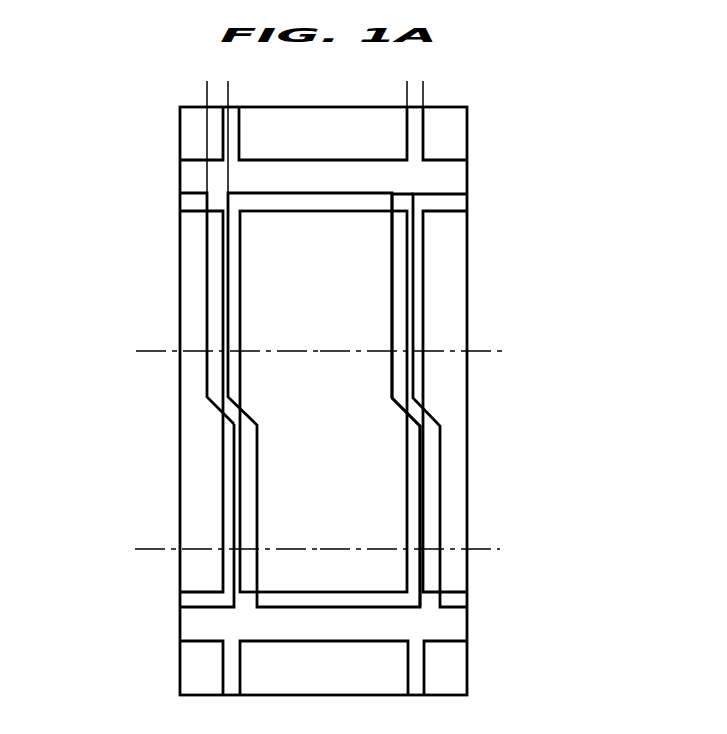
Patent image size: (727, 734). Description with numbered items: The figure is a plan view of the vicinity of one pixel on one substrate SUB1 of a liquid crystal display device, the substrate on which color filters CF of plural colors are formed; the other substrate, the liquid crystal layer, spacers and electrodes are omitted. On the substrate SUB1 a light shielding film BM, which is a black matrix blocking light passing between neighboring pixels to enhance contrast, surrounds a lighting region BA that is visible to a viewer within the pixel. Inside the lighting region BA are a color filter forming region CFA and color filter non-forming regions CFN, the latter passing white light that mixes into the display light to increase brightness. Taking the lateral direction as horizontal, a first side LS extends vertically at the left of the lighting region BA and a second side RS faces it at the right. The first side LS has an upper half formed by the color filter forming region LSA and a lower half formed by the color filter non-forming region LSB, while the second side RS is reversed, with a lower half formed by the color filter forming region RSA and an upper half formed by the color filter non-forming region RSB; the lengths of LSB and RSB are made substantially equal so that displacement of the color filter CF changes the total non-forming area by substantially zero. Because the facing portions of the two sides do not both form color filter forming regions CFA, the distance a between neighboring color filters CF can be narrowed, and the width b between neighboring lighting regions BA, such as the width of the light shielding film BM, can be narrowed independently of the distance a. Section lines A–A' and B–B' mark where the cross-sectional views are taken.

The substrate SUB1 is at (467, 135).
The color filter forming region CFA is at (270, 254).
The color filter non-forming region CFN is at (402, 248).
The lighting region BA is at (407, 303).
The color filter CF is at (420, 500).
The light shielding film BM is at (236, 468).
The first side LS is at (146, 400).
The color filter forming region of the first side LSA is at (238, 379).
The color filter non-forming region of the first side LSB is at (238, 452).
The second side RS is at (509, 400).
The color filter forming region of the second side RSA is at (432, 450).
The color filter non-forming region of the second side RSB is at (412, 381).
The distance between neighboring color filters a is at (162, 92).
The width between neighboring lighting regions b is at (368, 92).
The line A–A' A is at (218, 341).
The line A– A' is at (425, 340).
The line B–B' B is at (216, 546).
The line B– B' is at (428, 545).